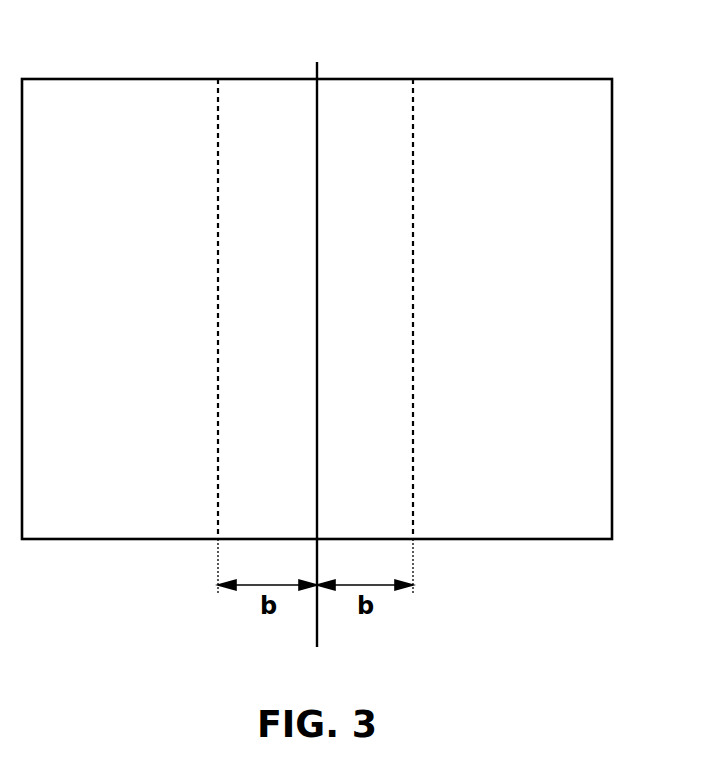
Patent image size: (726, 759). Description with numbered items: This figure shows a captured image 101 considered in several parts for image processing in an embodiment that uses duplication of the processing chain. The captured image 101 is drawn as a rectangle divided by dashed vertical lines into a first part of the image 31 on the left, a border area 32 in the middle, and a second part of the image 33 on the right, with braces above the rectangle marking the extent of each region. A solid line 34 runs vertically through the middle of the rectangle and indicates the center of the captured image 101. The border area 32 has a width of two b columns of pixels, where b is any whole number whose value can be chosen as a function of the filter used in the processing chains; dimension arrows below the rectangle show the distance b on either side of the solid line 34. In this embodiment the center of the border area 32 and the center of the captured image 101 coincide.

The captured image 101 is at (614, 133).
The first part of the image 31 is at (219, 67).
The border area 32 is at (413, 67).
The second part of the image 33 is at (612, 67).
The solid line 34 is at (320, 626).